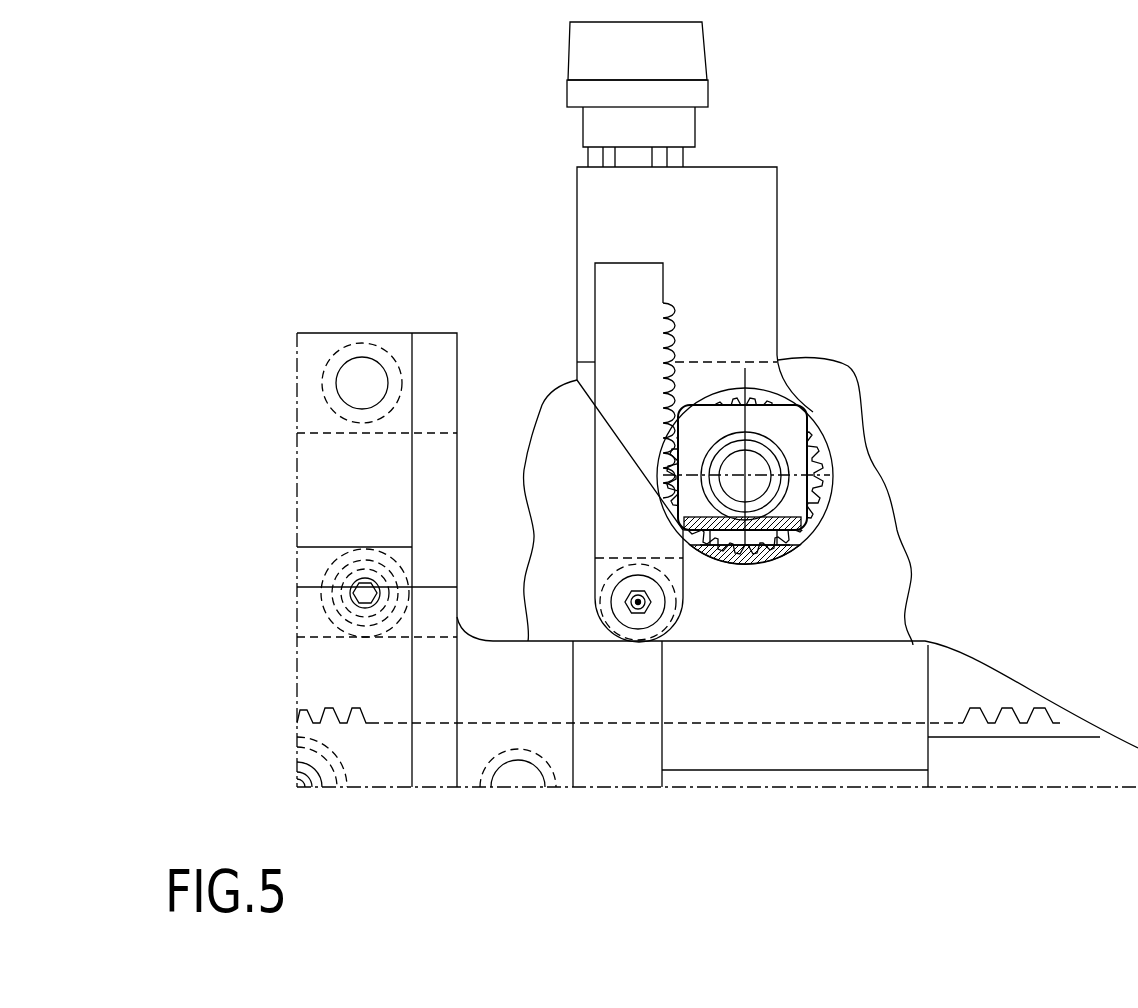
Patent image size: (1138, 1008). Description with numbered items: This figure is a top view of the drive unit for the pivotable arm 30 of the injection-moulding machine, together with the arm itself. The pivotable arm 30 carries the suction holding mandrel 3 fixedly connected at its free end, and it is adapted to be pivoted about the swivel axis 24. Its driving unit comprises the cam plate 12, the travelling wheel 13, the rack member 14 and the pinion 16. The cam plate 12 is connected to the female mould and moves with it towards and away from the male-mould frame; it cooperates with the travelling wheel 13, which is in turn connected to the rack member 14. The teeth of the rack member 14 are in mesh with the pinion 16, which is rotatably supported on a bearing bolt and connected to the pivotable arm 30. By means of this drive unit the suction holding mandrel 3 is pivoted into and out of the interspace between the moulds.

The suction holding mandrel 3 is at (722, 128).
The cam plate 12 is at (838, 660).
The travelling wheel 13 is at (672, 612).
The rack member 14 is at (637, 316).
The pinion 16 is at (803, 428).
The swivel axis 24 is at (745, 476).
The pivotable arm 30 is at (728, 232).